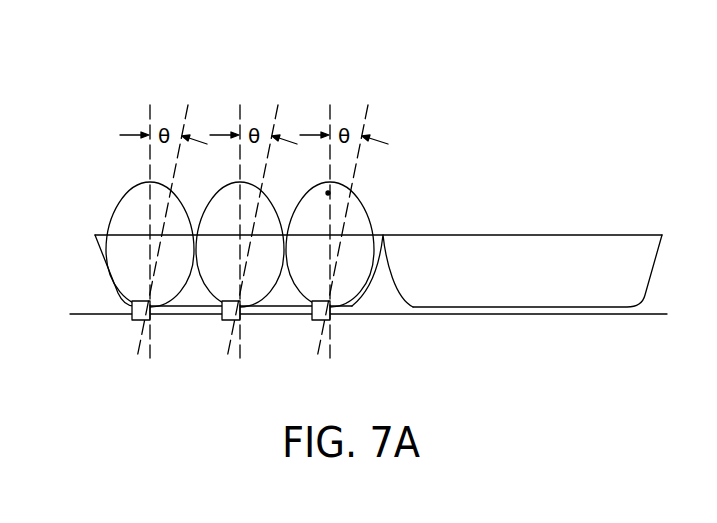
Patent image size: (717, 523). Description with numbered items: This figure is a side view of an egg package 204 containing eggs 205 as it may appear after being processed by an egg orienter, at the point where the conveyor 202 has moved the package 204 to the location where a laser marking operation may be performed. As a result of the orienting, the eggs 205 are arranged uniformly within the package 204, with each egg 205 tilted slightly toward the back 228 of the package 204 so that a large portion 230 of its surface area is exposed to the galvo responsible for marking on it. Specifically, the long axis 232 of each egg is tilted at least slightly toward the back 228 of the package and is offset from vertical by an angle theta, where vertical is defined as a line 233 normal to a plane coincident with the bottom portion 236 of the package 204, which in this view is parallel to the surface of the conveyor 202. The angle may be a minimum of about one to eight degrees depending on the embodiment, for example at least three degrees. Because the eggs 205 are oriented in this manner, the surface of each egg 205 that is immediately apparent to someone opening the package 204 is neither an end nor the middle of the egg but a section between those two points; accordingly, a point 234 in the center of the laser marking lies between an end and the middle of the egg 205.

The conveyor 202 is at (653, 313).
The package 204 is at (113, 287).
The eggs 205 is at (357, 195).
The back of the package 228 is at (384, 235).
The large portion of surface area 230 is at (148, 194).
The long axis 232 is at (188, 105).
The vertical line 233 is at (150, 105).
The point in the center of the marking 234 is at (328, 191).
The bottom portion of the package 236 is at (224, 319).